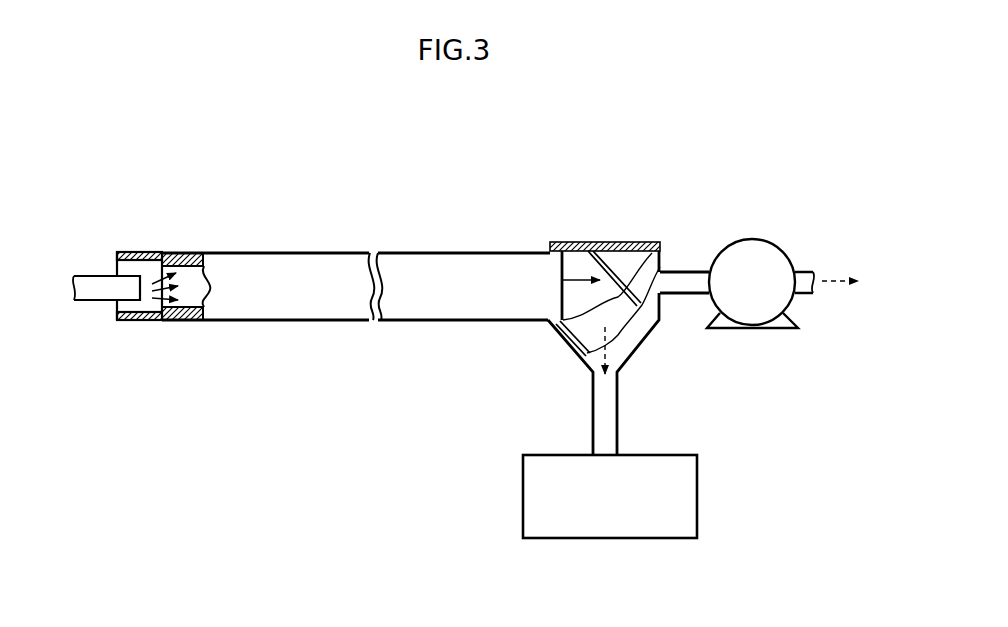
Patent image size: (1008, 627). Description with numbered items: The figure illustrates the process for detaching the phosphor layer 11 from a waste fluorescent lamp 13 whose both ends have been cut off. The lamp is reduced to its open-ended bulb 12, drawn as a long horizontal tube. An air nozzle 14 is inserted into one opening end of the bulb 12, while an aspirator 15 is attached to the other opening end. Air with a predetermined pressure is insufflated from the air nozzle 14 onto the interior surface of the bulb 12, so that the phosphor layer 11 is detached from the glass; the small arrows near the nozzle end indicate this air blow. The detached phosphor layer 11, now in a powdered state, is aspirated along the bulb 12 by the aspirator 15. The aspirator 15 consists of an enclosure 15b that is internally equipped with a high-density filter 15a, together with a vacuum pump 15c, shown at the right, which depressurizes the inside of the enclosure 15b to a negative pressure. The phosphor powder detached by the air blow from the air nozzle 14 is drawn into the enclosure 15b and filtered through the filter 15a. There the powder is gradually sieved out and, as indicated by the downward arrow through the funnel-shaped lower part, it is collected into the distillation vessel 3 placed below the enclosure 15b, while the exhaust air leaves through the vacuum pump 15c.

The distillation vessel 3 is at (697, 493).
The phosphor layer 11 is at (187, 262).
The bulb 12 is at (154, 252).
The waste fluorescent lamp 13 is at (298, 249).
The air nozzle 14 is at (94, 282).
The aspirator 15 is at (676, 224).
The high-density filter 15a is at (563, 334).
The enclosure 15b is at (600, 250).
The vacuum pump 15c is at (753, 250).